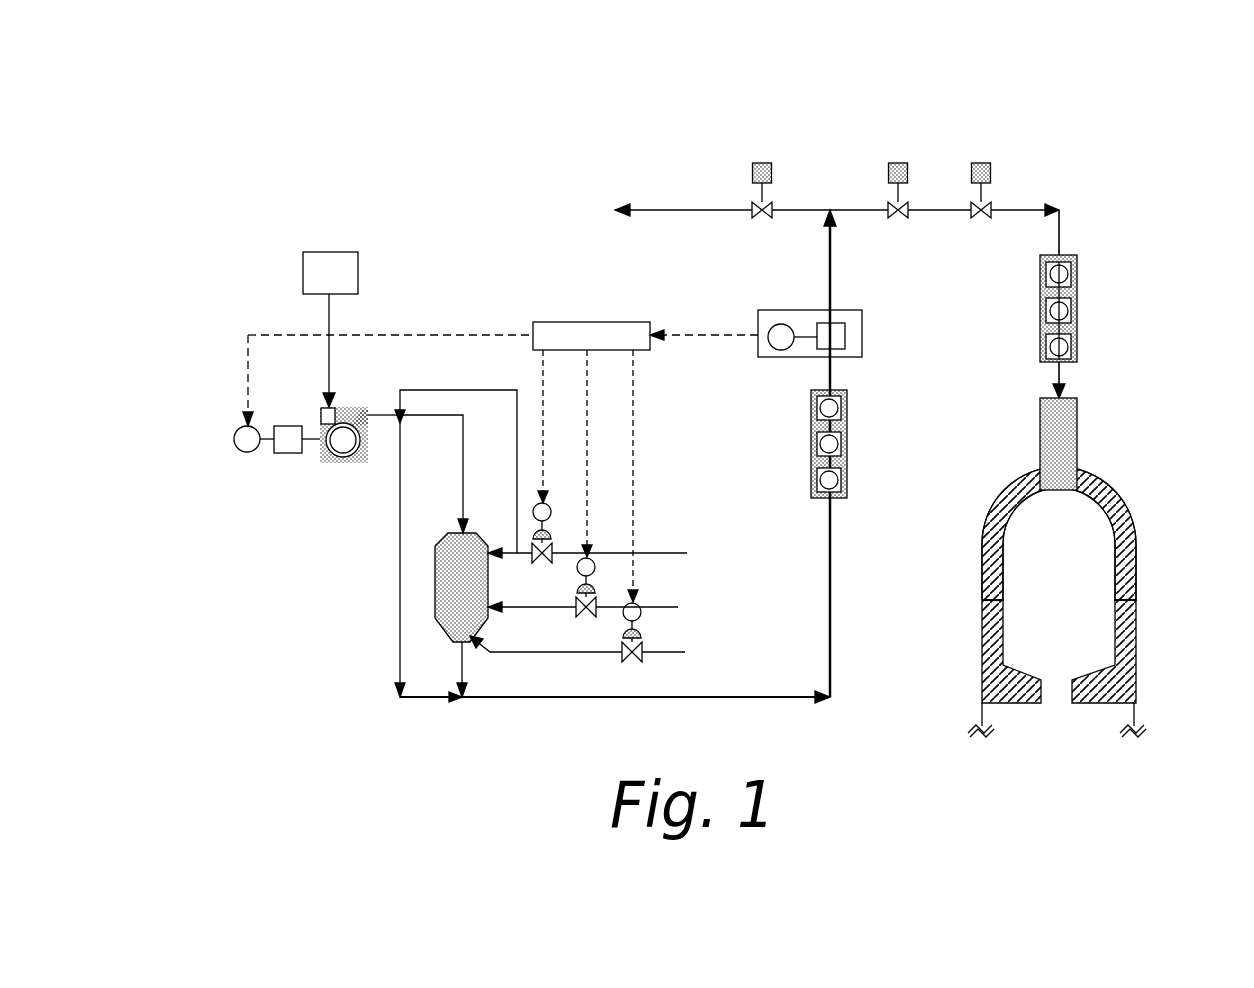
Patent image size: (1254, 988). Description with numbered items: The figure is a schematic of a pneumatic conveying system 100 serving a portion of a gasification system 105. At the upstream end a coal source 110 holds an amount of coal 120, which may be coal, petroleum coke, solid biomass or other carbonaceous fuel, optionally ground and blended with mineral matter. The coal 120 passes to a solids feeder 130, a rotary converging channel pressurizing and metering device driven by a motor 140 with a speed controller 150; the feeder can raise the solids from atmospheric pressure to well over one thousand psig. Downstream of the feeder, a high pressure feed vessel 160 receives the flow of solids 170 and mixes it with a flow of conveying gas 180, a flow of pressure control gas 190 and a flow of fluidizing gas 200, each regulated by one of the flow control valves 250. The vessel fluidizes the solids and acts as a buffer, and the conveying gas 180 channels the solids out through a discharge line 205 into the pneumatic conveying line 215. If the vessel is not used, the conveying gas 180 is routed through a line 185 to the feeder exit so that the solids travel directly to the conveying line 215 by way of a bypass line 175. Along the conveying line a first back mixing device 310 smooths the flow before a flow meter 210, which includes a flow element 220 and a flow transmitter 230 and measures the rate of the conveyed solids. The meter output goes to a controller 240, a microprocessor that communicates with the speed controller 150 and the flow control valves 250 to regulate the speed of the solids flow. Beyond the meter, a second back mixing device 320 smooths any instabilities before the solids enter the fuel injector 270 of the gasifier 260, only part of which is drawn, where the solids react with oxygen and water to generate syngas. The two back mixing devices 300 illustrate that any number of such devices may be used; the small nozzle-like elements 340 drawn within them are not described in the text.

The pneumatic conveying system 100 is at (370, 108).
The gasification system 105 is at (1150, 523).
The coal source 110 is at (303, 256).
The coal 120 is at (320, 272).
The solids feeder 130 is at (345, 425).
The motor 140 is at (291, 425).
The speed controller 150 is at (234, 434).
The high pressure feed vessel 160 is at (490, 593).
The flow of solids 170 is at (401, 478).
The bypass line 175 is at (399, 630).
The flow of conveying gas 180 is at (656, 553).
The line 185 is at (433, 392).
The flow of pressure control gas 190 is at (680, 607).
The flow of fluidizing gas 200 is at (674, 652).
The discharge line 205 is at (464, 673).
The flow meter 210 is at (880, 323).
The pneumatic conveying line 215 is at (716, 696).
The flow element 220 is at (836, 322).
The flow transmitter 230 is at (780, 324).
The controller 240 is at (610, 322).
The flow control valves 250 is at (551, 510).
The gasifier 260 is at (1120, 487).
The fuel injector 270 is at (1078, 430).
The back mixing devices 300 is at (800, 388).
The first back mixing device 310 is at (848, 393).
The second back mixing device 320 is at (1078, 258).
The atomizer nozzle 340 is at (838, 408).